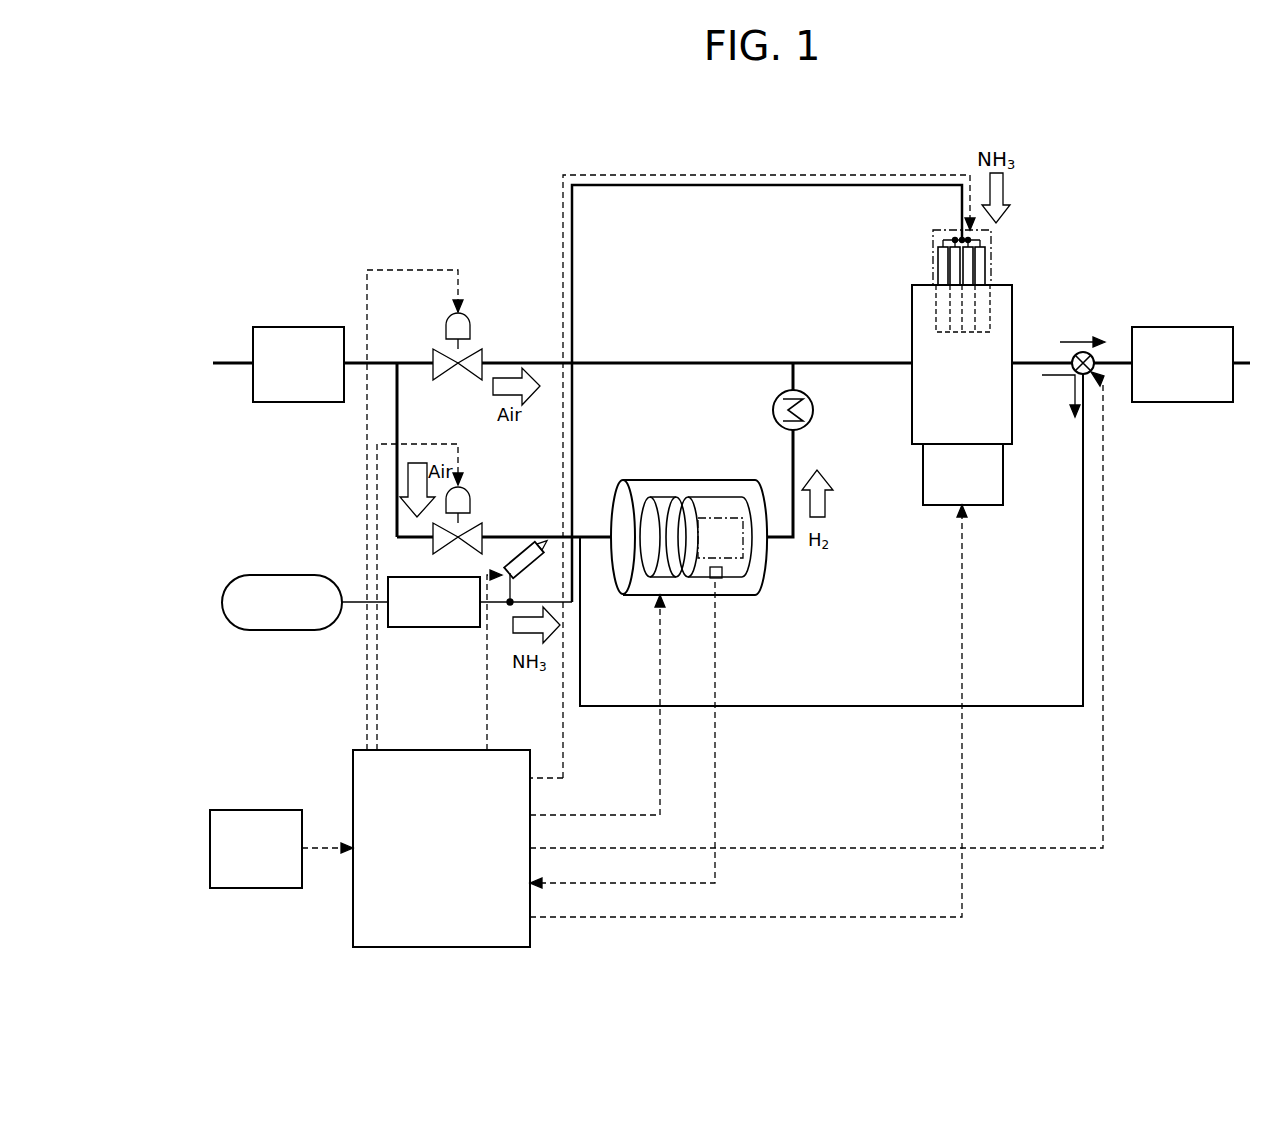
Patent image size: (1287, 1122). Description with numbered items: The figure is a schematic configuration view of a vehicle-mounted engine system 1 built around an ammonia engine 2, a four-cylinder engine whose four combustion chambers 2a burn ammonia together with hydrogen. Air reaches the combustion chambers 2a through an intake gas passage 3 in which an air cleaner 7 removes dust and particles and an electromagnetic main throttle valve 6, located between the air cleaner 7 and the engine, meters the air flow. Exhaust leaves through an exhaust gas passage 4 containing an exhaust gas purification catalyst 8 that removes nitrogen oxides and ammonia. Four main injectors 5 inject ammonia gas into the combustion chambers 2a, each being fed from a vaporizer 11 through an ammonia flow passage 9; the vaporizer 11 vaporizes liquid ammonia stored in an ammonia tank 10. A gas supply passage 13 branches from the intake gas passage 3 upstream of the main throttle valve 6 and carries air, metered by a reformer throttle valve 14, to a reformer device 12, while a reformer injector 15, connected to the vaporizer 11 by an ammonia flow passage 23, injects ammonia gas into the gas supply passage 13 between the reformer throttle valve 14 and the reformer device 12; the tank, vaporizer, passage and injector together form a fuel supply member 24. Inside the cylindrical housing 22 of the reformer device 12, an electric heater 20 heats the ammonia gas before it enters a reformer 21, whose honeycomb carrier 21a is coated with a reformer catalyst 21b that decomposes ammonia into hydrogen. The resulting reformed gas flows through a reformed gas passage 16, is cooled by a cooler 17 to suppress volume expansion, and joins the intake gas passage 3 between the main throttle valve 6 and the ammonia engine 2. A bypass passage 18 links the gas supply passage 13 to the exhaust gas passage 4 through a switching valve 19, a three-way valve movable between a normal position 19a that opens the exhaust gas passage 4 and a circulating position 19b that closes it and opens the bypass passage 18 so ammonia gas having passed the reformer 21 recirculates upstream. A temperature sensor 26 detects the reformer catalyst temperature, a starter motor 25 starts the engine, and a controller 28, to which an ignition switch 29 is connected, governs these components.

The engine system 1 is at (392, 200).
The ammonia engine 2 is at (912, 325).
The combustion chamber 2a is at (940, 300).
The intake gas passage 3 is at (681, 360).
The exhaust gas passage 4 is at (1045, 361).
The main injector 5 is at (940, 262).
The main throttle valve 6 is at (468, 328).
The air cleaner 7 is at (301, 327).
The exhaust gas purification catalyst 8 is at (1183, 327).
The ammonia flow passage 9 is at (573, 279).
The ammonia tank 10 is at (283, 575).
The vaporizer 11 is at (406, 627).
The reformer device 12 is at (683, 470).
The gas supply passage 13 is at (522, 540).
The reformer throttle valve 14 is at (470, 491).
The reformer injector 15 is at (530, 556).
The reformed gas passage 16 is at (778, 545).
The cooler 17 is at (773, 402).
The bypass passage 18 is at (1023, 706).
The switching valve 19 is at (1092, 373).
The normal position 19a is at (1082, 340).
The circulating position 19b is at (1058, 380).
The electric heater 20 is at (651, 497).
The reformer 21 is at (722, 497).
The carrier 21a is at (757, 567).
The reformer catalyst 21b is at (738, 560).
The housing 22 is at (612, 488).
The ammonia flow passage 23 is at (510, 606).
The fuel supply member 24 is at (467, 634).
The starter motor 25 is at (990, 505).
The temperature sensor 26 is at (700, 580).
The controller 28 is at (353, 760).
The ignition switch 29 is at (235, 810).